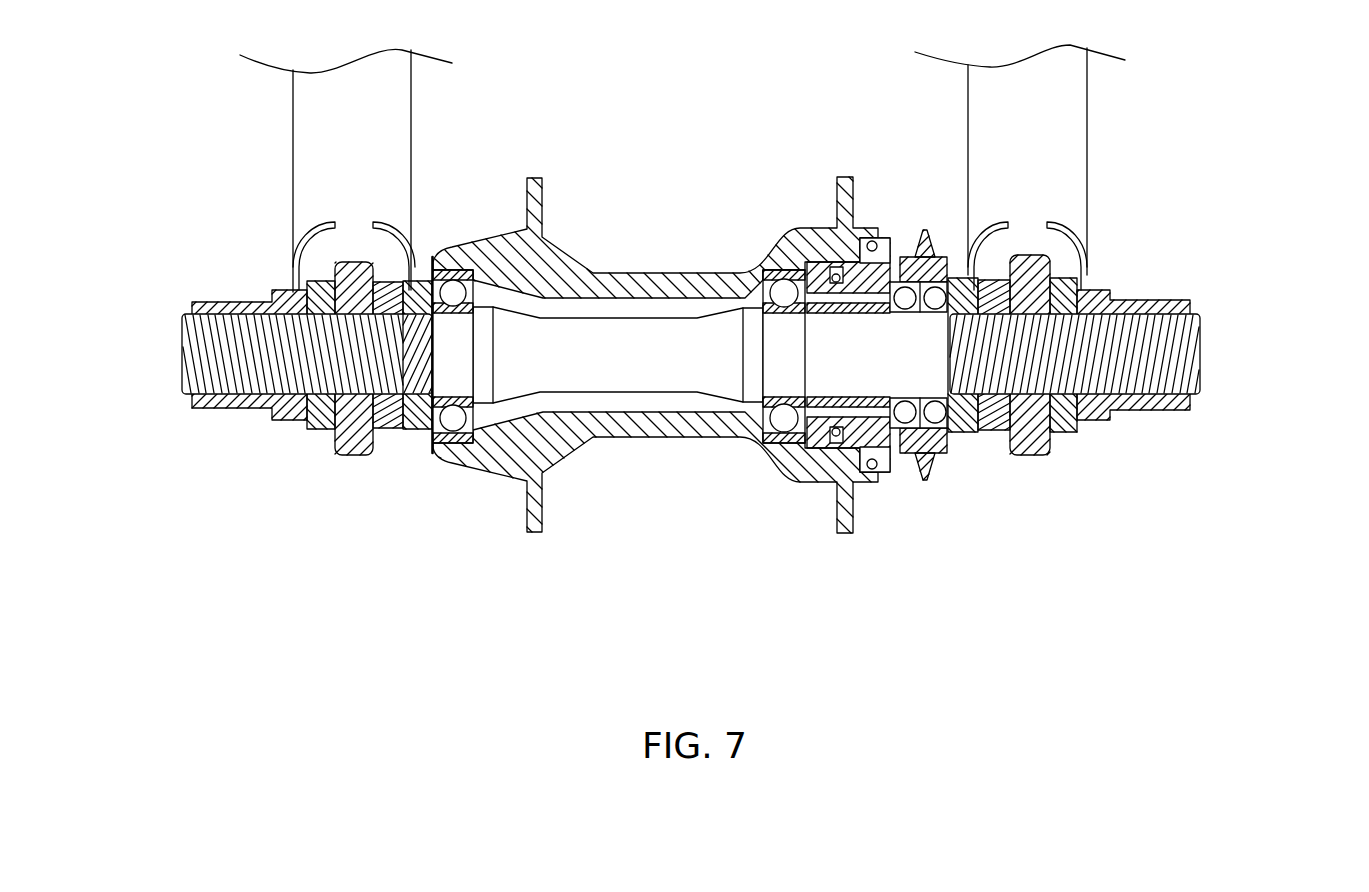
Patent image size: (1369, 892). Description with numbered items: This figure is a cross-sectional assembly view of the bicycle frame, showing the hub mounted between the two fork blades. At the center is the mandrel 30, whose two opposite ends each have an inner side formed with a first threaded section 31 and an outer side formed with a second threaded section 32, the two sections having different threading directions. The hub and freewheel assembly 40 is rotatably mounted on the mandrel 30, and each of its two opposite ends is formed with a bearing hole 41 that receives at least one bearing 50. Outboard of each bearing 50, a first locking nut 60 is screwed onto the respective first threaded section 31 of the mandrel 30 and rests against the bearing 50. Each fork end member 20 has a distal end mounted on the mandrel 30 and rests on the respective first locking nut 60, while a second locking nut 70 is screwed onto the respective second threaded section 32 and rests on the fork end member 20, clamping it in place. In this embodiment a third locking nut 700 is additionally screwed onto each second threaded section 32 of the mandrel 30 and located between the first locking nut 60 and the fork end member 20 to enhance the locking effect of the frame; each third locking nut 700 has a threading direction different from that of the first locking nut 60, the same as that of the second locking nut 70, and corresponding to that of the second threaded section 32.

The fork end member 20 is at (292, 122).
The mandrel 30 is at (603, 370).
The first threaded section 31 is at (440, 357).
The second threaded section 32 is at (263, 368).
The hub and freewheel assembly 40 is at (695, 440).
The bearing hole 41 is at (466, 270).
The bearing 50 is at (451, 280).
The first locking nut 60 is at (418, 436).
The second locking nut 70 is at (297, 434).
The third locking nut 700 is at (390, 436).